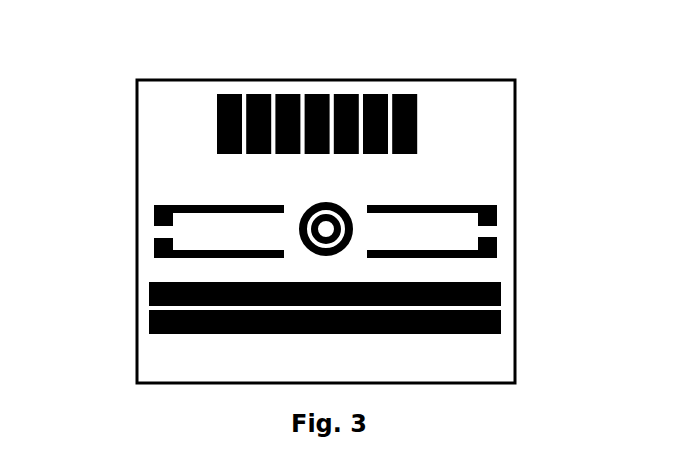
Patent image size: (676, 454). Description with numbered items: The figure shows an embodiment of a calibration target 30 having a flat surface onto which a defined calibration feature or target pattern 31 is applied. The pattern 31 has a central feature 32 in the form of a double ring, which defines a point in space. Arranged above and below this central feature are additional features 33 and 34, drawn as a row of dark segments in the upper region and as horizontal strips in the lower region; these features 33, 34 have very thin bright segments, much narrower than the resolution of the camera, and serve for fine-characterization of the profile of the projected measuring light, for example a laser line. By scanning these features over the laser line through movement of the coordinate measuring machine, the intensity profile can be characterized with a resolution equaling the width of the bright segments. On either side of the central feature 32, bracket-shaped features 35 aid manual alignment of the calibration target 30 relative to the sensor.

The calibration target 30 is at (326, 200).
The calibration pattern 31 is at (284, 231).
The central feature 32 is at (300, 226).
The additional feature 33 is at (323, 86).
The additional feature 34 is at (279, 329).
The alignment feature 35 is at (479, 219).